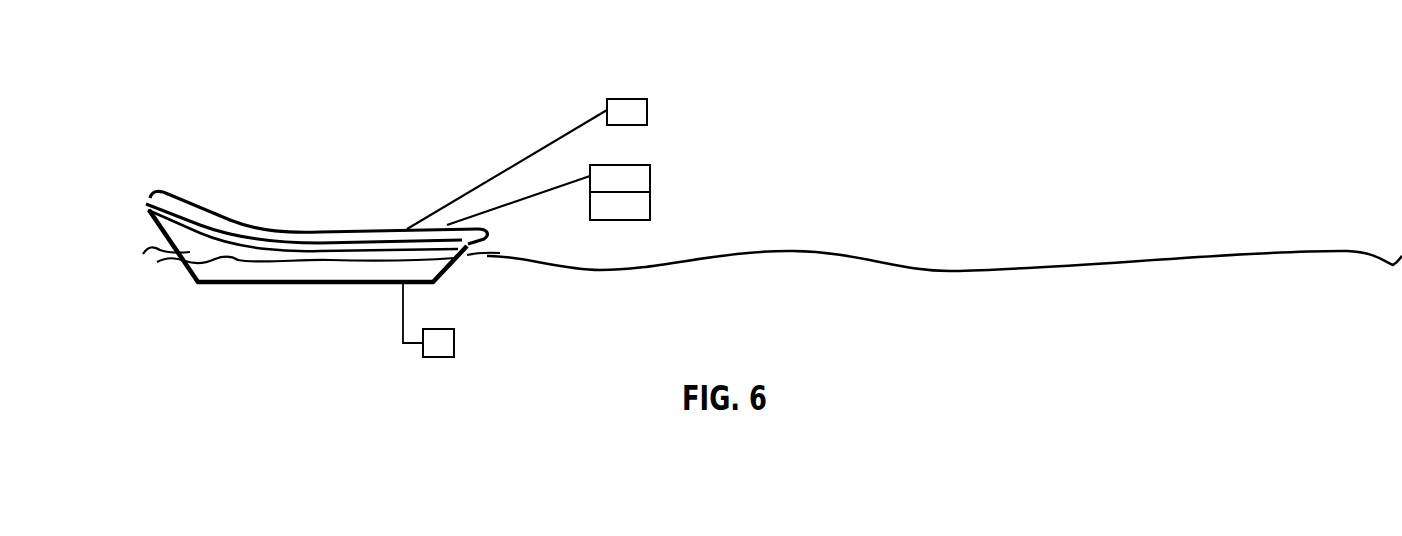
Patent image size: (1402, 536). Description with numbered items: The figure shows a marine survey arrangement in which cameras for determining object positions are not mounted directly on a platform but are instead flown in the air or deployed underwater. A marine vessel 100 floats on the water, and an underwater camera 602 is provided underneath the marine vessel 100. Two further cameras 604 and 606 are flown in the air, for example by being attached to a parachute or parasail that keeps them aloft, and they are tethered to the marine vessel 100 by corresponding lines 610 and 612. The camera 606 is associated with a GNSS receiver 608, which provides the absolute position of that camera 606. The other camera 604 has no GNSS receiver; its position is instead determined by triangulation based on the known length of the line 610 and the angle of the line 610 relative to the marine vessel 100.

The marine vessel 100 is at (214, 207).
The underwater camera 602 is at (455, 343).
The camera 604 is at (640, 99).
The camera 606 is at (652, 166).
The GNSS receiver 608 is at (651, 216).
The line 610 is at (525, 157).
The line 612 is at (520, 203).